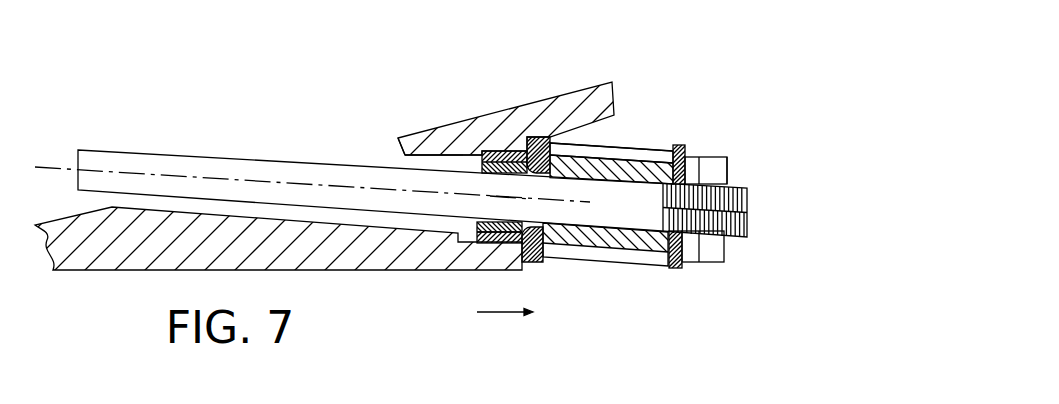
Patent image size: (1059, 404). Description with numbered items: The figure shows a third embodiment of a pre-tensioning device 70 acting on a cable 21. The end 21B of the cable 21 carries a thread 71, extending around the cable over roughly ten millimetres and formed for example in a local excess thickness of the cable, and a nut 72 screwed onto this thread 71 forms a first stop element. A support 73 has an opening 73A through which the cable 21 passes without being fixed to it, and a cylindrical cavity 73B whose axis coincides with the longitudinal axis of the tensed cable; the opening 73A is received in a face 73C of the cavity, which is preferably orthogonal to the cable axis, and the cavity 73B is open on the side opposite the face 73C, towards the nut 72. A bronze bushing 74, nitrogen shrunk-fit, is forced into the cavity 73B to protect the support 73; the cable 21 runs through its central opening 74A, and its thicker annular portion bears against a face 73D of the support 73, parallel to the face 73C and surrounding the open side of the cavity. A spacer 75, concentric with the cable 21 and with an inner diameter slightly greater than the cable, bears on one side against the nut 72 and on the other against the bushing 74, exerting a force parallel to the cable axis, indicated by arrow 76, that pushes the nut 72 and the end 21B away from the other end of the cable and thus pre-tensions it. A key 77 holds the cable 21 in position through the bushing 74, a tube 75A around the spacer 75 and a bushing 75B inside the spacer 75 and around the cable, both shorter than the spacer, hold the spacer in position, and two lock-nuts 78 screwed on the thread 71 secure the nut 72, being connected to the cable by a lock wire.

The cable 21 is at (153, 166).
The end of the cable 21B is at (749, 241).
The pre-tensioning device 70 is at (663, 128).
The thread 71 is at (718, 233).
The nut 72 is at (681, 145).
The support 73 is at (483, 120).
The opening 73A is at (403, 158).
The cavity 73B is at (475, 155).
The face of the cavity 73C is at (462, 156).
The face of the support 73D is at (522, 138).
The bushing 74 is at (553, 137).
The central opening of the bushing 74A is at (516, 187).
The spacer 75 is at (613, 157).
The tube 75A is at (642, 158).
The bushing 75B is at (612, 238).
The arrow 76 is at (495, 313).
The key 77 is at (505, 228).
The lock-nuts 78 is at (715, 172).